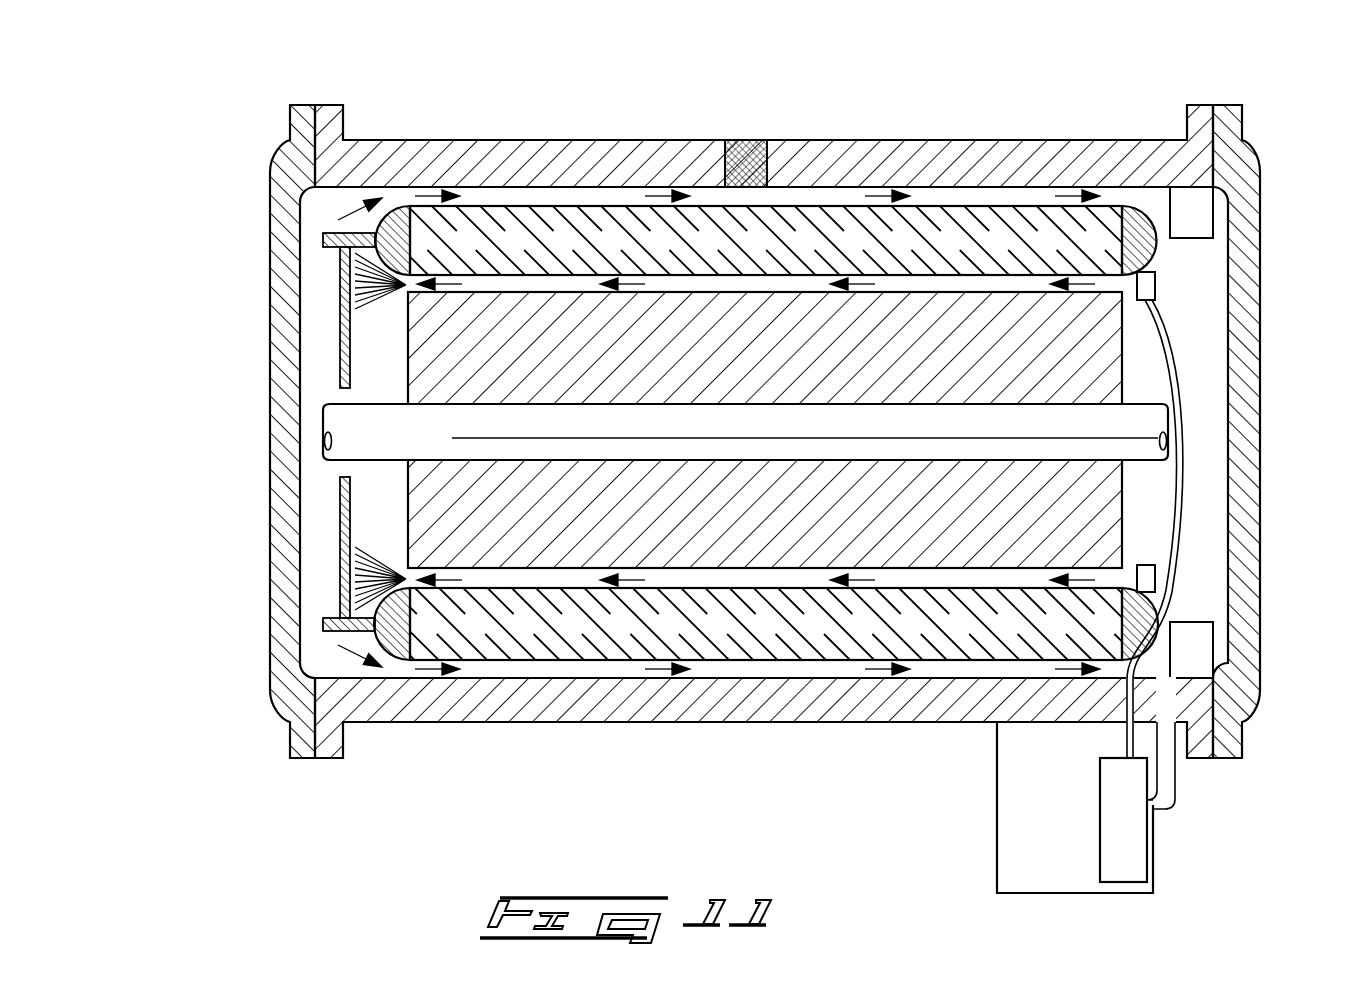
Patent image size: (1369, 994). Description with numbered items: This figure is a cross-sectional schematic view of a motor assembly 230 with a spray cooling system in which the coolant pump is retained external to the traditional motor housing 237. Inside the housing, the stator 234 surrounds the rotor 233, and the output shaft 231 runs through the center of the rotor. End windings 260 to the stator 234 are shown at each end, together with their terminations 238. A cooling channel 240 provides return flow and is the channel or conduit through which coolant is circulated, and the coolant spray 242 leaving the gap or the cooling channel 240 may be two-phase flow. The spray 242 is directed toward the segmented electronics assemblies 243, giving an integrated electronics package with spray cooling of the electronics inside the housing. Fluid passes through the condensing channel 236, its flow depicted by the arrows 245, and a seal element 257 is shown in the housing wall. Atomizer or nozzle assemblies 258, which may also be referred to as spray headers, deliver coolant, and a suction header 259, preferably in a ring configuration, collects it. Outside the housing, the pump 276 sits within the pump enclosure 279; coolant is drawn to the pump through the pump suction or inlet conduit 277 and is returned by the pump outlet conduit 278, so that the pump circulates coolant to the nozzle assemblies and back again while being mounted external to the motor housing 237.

The motor assembly 230 is at (780, 76).
The output shaft 231 is at (838, 433).
The rotor 233 is at (765, 368).
The stator 234 is at (1000, 256).
The condensing channel 236 is at (1070, 654).
The motor housing 237 is at (603, 140).
The terminations 238 is at (322, 240).
The cooling channel 240 is at (913, 285).
The coolant spray 242 is at (403, 298).
The segmented electronics assemblies 243 is at (337, 493).
The arrows 245 is at (873, 197).
The seal plug 257 is at (745, 140).
The atomizer or nozzle assemblies 258 is at (1157, 288).
The suction header 259 is at (1193, 215).
The end windings 260 is at (424, 244).
The pump 276 is at (1127, 858).
The pump suction or inlet conduit 277 is at (1178, 788).
The pump outlet conduit 278 is at (1123, 738).
The pump enclosure 279 is at (1025, 832).